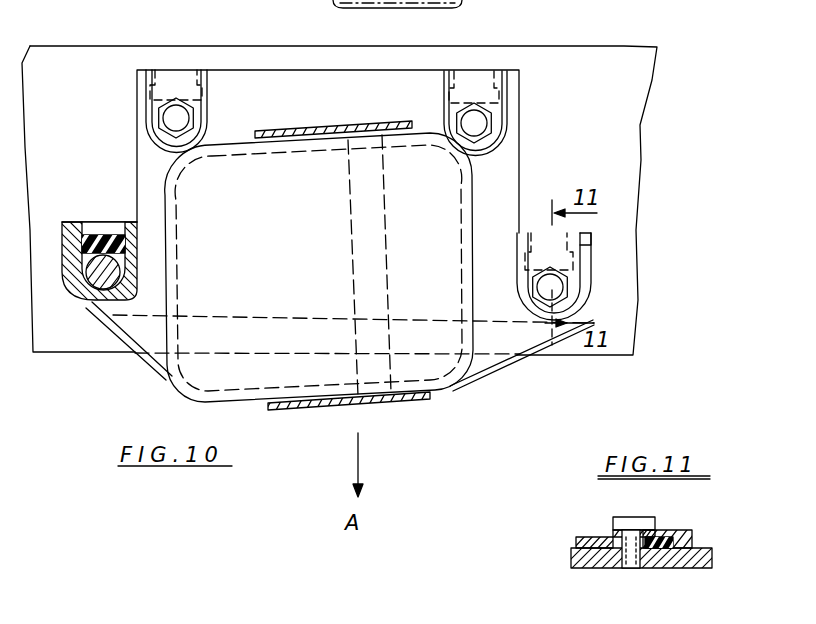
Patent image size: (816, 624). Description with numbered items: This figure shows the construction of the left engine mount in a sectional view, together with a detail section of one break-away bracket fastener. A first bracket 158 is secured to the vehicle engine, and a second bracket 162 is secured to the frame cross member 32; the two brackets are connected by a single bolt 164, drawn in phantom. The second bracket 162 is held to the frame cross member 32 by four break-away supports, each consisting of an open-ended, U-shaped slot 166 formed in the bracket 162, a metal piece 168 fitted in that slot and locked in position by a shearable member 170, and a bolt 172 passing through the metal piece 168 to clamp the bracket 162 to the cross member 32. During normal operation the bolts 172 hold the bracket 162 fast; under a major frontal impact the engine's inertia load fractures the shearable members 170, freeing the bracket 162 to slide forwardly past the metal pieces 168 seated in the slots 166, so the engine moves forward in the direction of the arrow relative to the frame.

In FIG. 10, the frame cross member 32 is at (624, 47).
In FIG. 11, the frame cross member 32 is at (593, 568).
In FIG. 10, the first bracket 158 is at (289, 131).
In FIG. 10, the second bracket 162 is at (488, 378).
In FIG. 11, the second bracket 162 is at (587, 537).
In FIG. 10, the bolt 164 is at (357, 255).
In FIG. 10, the open-ended slot 166 is at (90, 222).
In FIG. 10, the metal piece 168 is at (175, 78).
In FIG. 11, the metal piece 168 is at (693, 535).
In FIG. 10, the shearable member 170 is at (207, 94).
In FIG. 11, the shearable member 170 is at (663, 567).
In FIG. 10, the bolt 172 is at (162, 122).
In FIG. 11, the bolt 172 is at (636, 517).